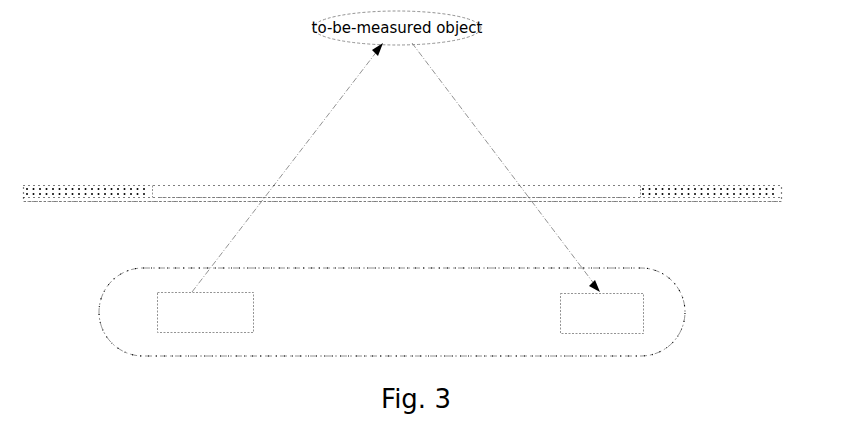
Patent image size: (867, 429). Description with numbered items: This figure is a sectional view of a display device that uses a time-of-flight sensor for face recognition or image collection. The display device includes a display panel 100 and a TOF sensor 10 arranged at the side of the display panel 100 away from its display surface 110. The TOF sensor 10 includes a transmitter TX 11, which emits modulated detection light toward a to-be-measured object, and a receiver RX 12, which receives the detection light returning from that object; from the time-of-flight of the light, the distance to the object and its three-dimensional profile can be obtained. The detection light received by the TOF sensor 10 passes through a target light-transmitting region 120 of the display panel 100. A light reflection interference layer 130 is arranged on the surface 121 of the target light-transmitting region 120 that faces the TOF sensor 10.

The TOF sensor 10 is at (685, 310).
The transmitter TX 11 is at (168, 292).
The receiver RX 12 is at (622, 293).
The display panel 100 is at (738, 185).
The display surface 110 is at (692, 176).
The target light-transmitting region 120 is at (552, 190).
The surface 121 is at (85, 204).
The light reflection interference layer 130 is at (768, 202).